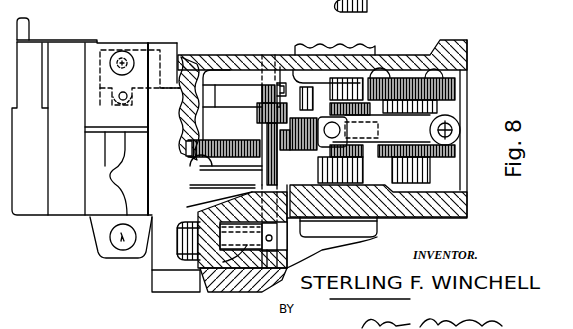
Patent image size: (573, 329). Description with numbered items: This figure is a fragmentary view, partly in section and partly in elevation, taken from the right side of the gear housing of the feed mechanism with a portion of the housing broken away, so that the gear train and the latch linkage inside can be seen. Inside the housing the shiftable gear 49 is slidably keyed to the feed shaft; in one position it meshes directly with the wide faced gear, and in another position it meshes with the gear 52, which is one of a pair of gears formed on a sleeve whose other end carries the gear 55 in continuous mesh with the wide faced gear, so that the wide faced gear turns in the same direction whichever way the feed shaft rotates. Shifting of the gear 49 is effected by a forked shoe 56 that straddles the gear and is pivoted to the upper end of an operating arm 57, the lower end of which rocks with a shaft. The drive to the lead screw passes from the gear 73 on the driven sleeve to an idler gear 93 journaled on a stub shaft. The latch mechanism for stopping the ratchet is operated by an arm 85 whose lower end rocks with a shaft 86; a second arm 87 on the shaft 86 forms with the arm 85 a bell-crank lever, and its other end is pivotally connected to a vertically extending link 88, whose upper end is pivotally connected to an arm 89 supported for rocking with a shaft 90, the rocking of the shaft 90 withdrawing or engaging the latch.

The shiftable gear 49 is at (302, 116).
The gear 52 is at (455, 84).
The gear 55 is at (362, 158).
The forked shoe 56 is at (333, 122).
The operating arm 57 is at (425, 145).
The gear 73 is at (188, 172).
The arm 85 is at (204, 292).
The shaft 86 is at (260, 173).
The second arm 87 is at (250, 109).
The vertically extending link 88 is at (220, 95).
The arm 89 is at (100, 72).
The shaft 90 is at (126, 50).
The idler gear 93 is at (186, 148).